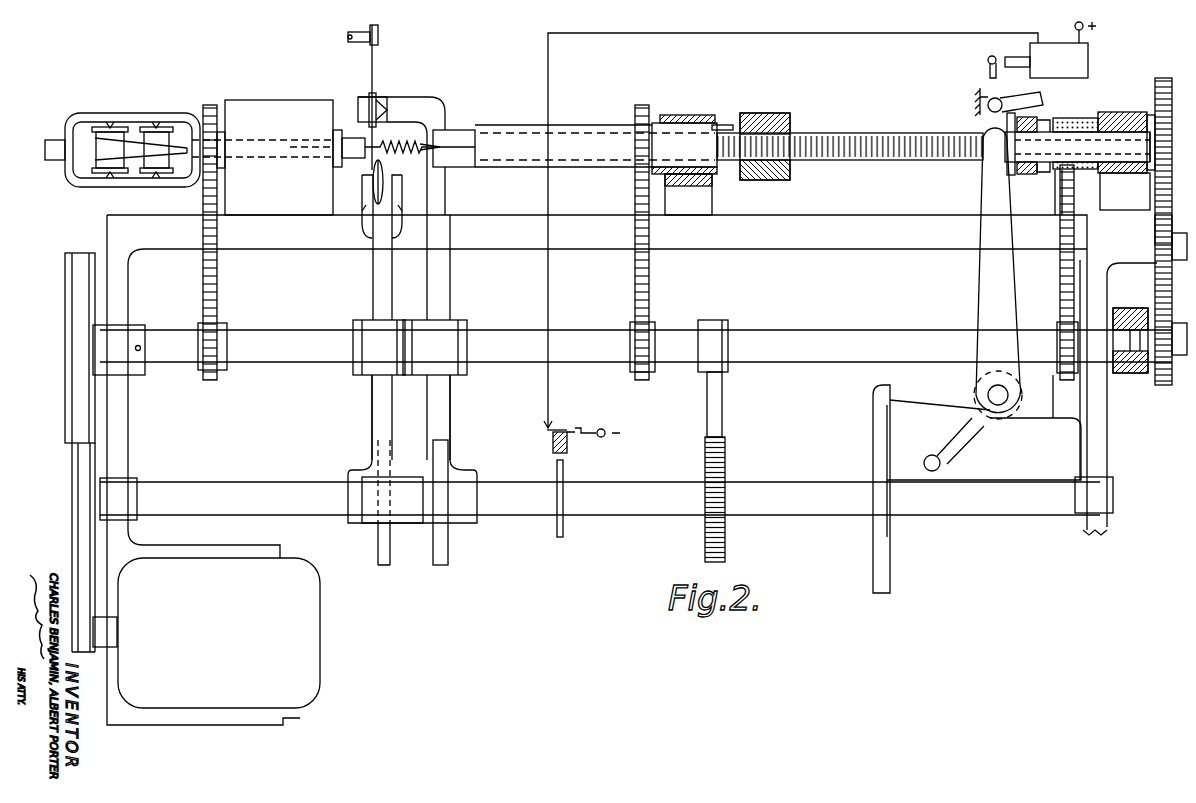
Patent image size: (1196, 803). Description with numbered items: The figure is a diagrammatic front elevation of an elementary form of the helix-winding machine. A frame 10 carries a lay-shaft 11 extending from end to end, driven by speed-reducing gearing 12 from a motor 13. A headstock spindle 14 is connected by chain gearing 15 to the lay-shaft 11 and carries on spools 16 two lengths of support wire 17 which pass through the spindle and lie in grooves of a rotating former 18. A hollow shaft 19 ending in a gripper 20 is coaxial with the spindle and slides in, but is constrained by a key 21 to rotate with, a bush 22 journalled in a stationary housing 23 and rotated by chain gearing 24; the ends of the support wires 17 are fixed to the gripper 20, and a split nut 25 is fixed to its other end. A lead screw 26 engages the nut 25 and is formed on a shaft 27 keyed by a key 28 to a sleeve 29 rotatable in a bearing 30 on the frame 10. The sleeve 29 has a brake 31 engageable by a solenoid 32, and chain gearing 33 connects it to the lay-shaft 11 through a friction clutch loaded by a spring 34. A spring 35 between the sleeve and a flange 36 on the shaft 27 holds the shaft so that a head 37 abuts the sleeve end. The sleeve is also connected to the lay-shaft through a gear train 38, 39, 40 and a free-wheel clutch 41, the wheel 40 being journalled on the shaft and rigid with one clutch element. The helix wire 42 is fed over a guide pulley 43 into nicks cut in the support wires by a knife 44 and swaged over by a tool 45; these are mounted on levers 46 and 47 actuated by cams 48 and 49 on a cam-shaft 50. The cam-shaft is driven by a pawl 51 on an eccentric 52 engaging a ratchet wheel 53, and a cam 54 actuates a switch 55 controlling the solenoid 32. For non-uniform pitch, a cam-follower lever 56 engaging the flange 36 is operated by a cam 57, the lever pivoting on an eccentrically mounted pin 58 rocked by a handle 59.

The frame 10 is at (107, 223).
The lay-shaft 11 is at (300, 362).
The speed-reducing gearing 12 is at (72, 470).
The motor 13 is at (312, 588).
The headstock spindle 14 is at (350, 140).
The chain gearing 15 is at (218, 290).
The spools 16 is at (147, 128).
The support wire 17 is at (186, 165).
The rotating former 18 is at (378, 147).
The hollow shaft 19 is at (690, 130).
The gripper 20 is at (470, 130).
The key 21 is at (728, 125).
The bush 22 is at (662, 117).
The stationary housing 23 is at (712, 202).
The chain gearing 24 is at (650, 272).
The split nut 25 is at (765, 115).
The lead screw 26 is at (860, 133).
The shaft 27 is at (1100, 165).
The key 28 is at (1063, 133).
The sleeve 29 is at (1125, 115).
The bearing 30 is at (1150, 118).
The brake 31 is at (1025, 108).
The solenoid 32 is at (1088, 62).
The chain gearing 33 is at (1060, 272).
The spring 34 is at (1085, 118).
The spring 35 is at (1027, 175).
The flange 36 is at (1007, 125).
The head 37 is at (1160, 168).
The gear train 38 is at (1172, 80).
The gear train 39 is at (1160, 230).
The wheel 40 is at (1180, 360).
The free-wheel clutch 41 is at (1130, 373).
The helix wire 42 is at (372, 77).
The guide pulley 43 is at (378, 36).
The knife 44 is at (380, 96).
The swaging tool 45 is at (370, 170).
The lever 46 is at (448, 275).
The lever 47 is at (372, 275).
The cam 48 is at (442, 565).
The cam 49 is at (385, 565).
The cam-shaft 50 is at (840, 468).
The pawl 51 is at (724, 417).
The eccentric 52 is at (730, 348).
The ratchet wheel 53 is at (726, 468).
The cam 54 is at (562, 480).
The switch 55 is at (555, 430).
The cam-follower lever 56 is at (1005, 325).
The cam 57 is at (873, 430).
The eccentrically mounted pin 58 is at (997, 408).
The handle 59 is at (956, 440).